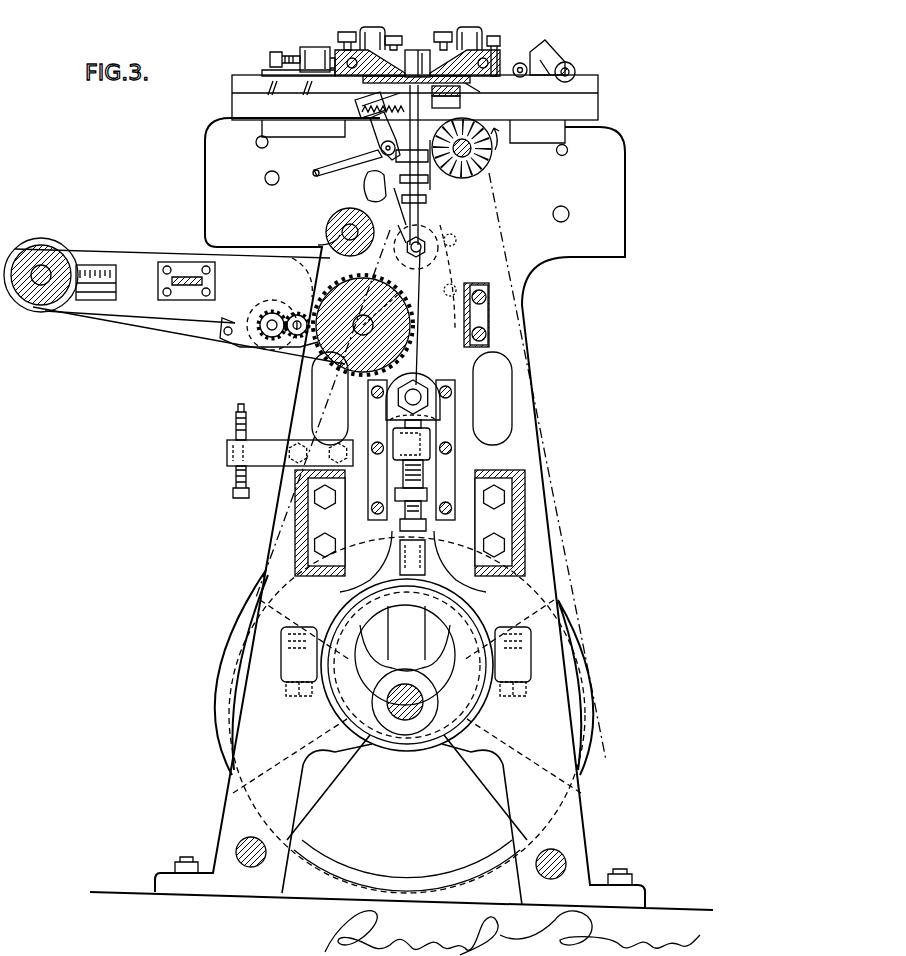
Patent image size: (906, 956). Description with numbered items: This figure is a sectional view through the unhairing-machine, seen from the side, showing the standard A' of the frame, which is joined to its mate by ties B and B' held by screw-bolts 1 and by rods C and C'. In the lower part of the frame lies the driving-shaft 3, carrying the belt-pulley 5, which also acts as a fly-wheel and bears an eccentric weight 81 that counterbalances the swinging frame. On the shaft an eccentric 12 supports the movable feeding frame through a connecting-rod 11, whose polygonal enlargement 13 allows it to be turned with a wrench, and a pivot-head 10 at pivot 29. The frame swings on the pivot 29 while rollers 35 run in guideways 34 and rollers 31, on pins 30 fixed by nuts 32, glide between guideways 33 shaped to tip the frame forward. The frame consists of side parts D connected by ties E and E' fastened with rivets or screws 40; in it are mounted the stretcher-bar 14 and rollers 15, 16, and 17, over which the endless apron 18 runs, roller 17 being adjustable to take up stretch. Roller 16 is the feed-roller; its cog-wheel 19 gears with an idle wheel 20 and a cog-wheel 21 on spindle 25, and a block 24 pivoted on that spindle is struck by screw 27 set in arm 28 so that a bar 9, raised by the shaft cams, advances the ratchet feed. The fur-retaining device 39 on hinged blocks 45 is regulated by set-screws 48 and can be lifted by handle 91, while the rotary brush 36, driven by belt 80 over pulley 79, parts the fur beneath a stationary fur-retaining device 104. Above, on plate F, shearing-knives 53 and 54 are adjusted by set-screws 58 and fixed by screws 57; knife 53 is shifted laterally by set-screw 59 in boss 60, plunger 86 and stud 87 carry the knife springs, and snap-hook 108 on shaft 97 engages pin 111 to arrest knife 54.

The standard A' is at (401, 514).
The plate F is at (415, 98).
The shearing-knife 53 is at (372, 82).
The shearing-knife 54 is at (485, 92).
The bar 9 is at (417, 63).
The stud 87 is at (415, 50).
The set-screw 58 is at (405, 18).
The screw 57 is at (421, 28).
The plunger 86 is at (496, 60).
The set-screw 59 is at (276, 52).
The boss 60 is at (315, 47).
The snap-hook 108 is at (548, 40).
The shaft 97 is at (570, 66).
The pin 111 is at (520, 77).
The stationary fur-retaining device 104 is at (460, 100).
The fur-retaining device 39 is at (365, 104).
The block 45 is at (378, 122).
The handle 91 is at (330, 170).
The set-screw 48 is at (368, 183).
The stretcher-bar 14 is at (418, 115).
The rotary brush 36 is at (466, 178).
The belt-pulley 79 is at (490, 158).
The roller 15 is at (332, 218).
The nut 32 is at (420, 238).
The roller 31 is at (400, 223).
The pin 30 is at (418, 258).
The guideway 33 is at (455, 282).
The feed-roller 16 is at (363, 325).
The cog-wheel 19 is at (330, 290).
The side part D is at (245, 258).
The roller 17 is at (36, 318).
The endless apron 18 is at (152, 338).
The tie E' is at (198, 281).
The rivet or screw 40 is at (500, 325).
The tie E is at (477, 319).
The cog-wheel 21 is at (275, 312).
The idle wheel 20 is at (294, 337).
The block 24 is at (226, 340).
The spindle 25 is at (267, 339).
The belt 80 is at (560, 505).
The guideway 34 is at (412, 450).
The pivot 29 is at (418, 380).
The roller 35 is at (432, 408).
The pivot-head 10 is at (414, 440).
The connecting-rod 11 is at (403, 480).
The polygonal enlargement 13 is at (395, 495).
The eccentric 12 is at (413, 561).
The screw 27 is at (246, 408).
The arm 28 is at (290, 453).
The tie B is at (320, 523).
The tie B' is at (500, 523).
The screw-bolt 1 is at (409, 522).
The driving-shaft 3 is at (407, 715).
The belt-pulley 5 is at (223, 688).
The eccentric weight 81 is at (322, 797).
The rod C is at (243, 860).
The rod C' is at (557, 875).